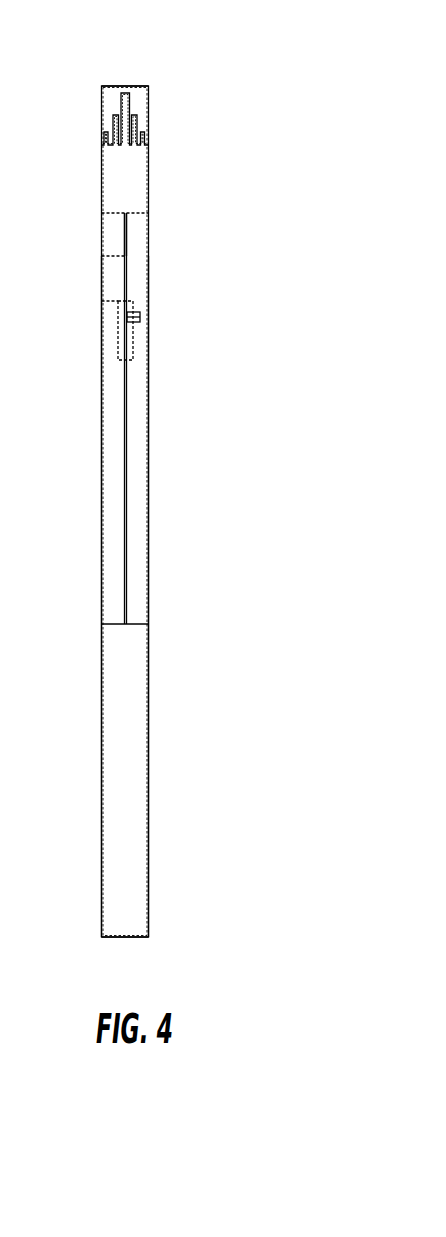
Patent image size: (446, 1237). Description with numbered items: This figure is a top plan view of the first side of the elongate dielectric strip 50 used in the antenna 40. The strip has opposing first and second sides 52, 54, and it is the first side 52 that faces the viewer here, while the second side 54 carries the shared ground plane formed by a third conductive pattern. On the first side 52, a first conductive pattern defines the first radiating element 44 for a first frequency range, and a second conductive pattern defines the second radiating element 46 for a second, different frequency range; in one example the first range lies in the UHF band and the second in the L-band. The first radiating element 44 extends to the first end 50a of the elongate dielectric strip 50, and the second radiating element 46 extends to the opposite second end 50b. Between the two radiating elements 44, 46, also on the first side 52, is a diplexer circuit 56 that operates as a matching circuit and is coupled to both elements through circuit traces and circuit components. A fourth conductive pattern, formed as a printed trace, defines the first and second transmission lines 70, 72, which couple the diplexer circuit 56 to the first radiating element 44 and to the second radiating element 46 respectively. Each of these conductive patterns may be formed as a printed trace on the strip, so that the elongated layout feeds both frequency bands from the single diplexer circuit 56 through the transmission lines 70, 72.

The antenna 40 is at (240, 216).
The first radiating element 44 is at (136, 681).
The second radiating element 46 is at (128, 170).
The elongate dielectric strip 50 is at (158, 415).
The first end 50a is at (132, 938).
The second end 50b is at (135, 87).
The first side 52 is at (114, 378).
The second side 54 is at (140, 540).
The diplexer circuit 56 is at (104, 320).
The first transmission line 70 is at (126, 387).
The second transmission line 72 is at (125, 240).